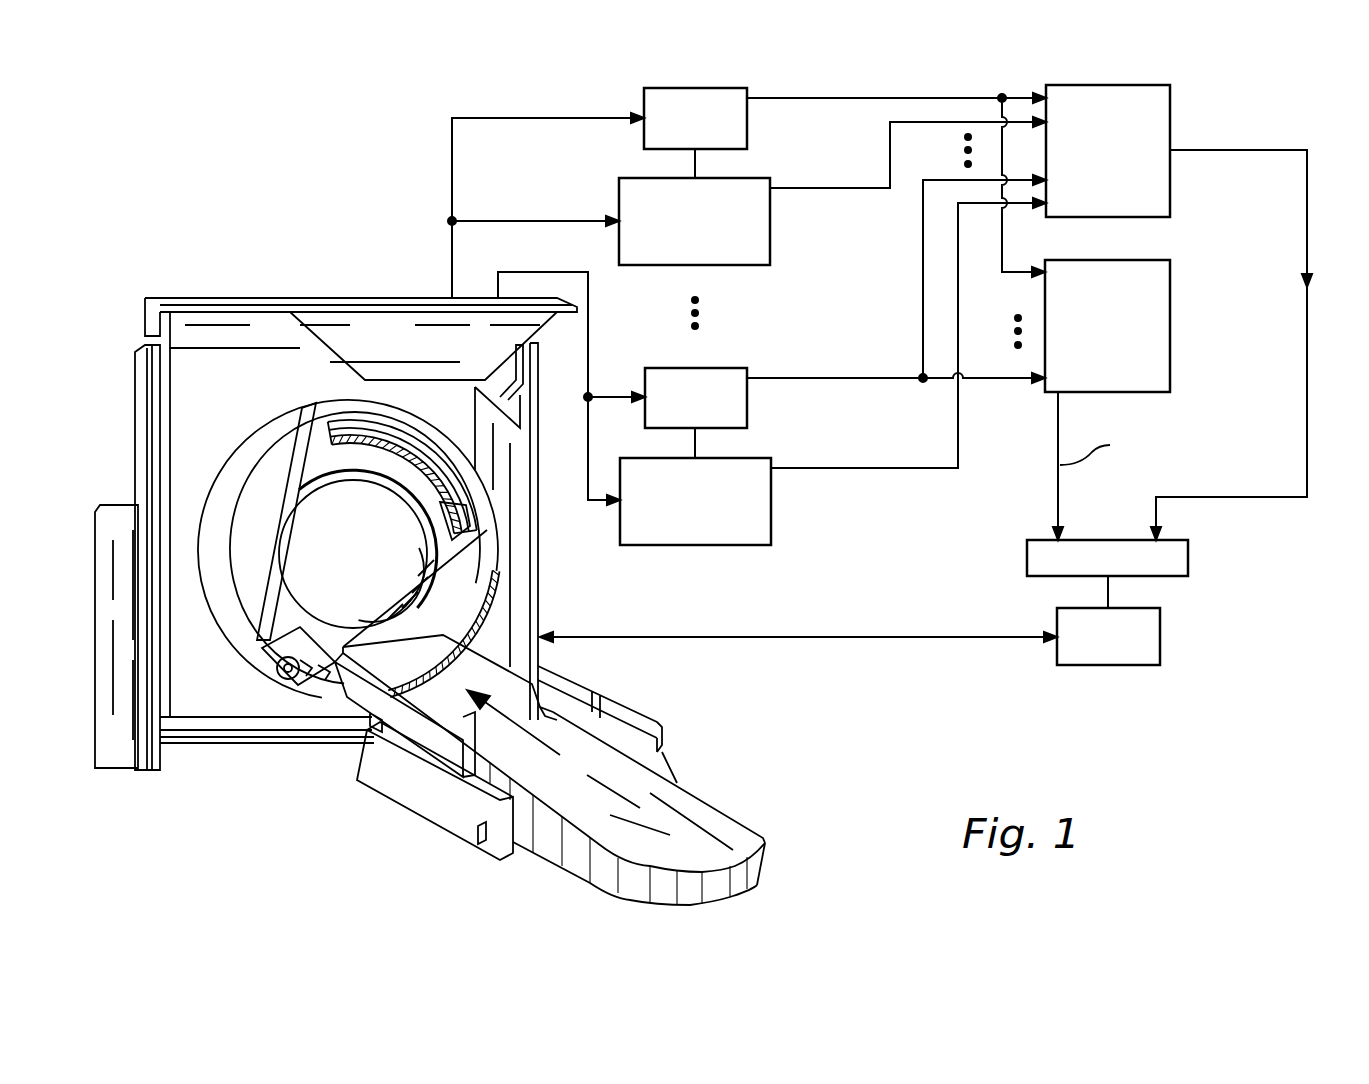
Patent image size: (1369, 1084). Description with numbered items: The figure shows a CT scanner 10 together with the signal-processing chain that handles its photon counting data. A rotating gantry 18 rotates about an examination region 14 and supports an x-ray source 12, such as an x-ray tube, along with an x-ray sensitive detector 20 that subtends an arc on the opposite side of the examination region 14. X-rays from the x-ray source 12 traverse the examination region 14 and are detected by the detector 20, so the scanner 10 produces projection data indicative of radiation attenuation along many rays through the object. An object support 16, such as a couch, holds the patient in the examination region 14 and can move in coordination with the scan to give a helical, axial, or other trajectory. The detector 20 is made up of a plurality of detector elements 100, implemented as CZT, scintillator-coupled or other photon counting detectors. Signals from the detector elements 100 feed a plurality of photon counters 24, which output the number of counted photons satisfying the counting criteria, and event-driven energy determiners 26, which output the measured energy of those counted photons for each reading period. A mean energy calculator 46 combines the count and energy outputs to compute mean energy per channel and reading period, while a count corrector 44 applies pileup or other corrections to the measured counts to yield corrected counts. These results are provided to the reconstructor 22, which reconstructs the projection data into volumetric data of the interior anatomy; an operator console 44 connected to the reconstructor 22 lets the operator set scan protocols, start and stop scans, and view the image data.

The CT scanner 10 is at (186, 232).
The x-ray source 12 is at (282, 678).
The examination region 14 is at (346, 549).
The object support 16 is at (707, 818).
The rotating gantry 18 is at (323, 465).
The x-ray sensitive detector 20 is at (463, 510).
The reconstructor 22 is at (1190, 557).
The photon counter 24 is at (680, 368).
The event-driven energy determiner 26 is at (772, 230).
The count corrector 44 is at (1172, 345).
The mean energy calculator 46 is at (1170, 188).
The detector element 100 is at (370, 443).